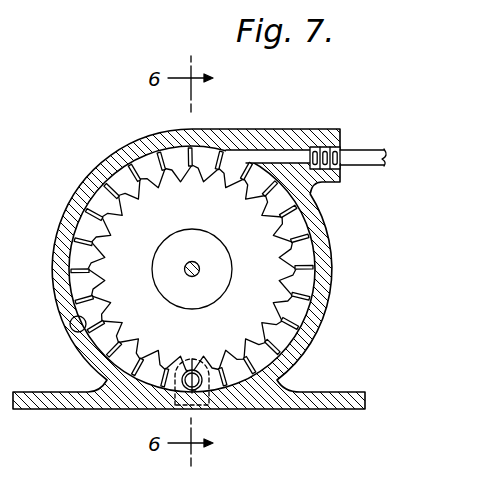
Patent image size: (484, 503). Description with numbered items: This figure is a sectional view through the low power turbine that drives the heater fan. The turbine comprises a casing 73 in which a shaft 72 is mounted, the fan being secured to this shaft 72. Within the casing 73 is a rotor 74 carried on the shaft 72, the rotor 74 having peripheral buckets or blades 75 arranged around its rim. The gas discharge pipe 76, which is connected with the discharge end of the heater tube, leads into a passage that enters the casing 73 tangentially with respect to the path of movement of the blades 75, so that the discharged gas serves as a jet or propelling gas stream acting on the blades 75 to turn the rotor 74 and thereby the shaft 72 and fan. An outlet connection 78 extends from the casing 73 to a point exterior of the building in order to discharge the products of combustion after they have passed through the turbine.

The shaft 72 is at (199, 266).
The casing 73 is at (145, 134).
The rotor 74 is at (140, 208).
The peripheral buckets or blades 75 is at (68, 326).
The gas discharge pipe 76 is at (367, 148).
The outlet connection 78 is at (216, 400).